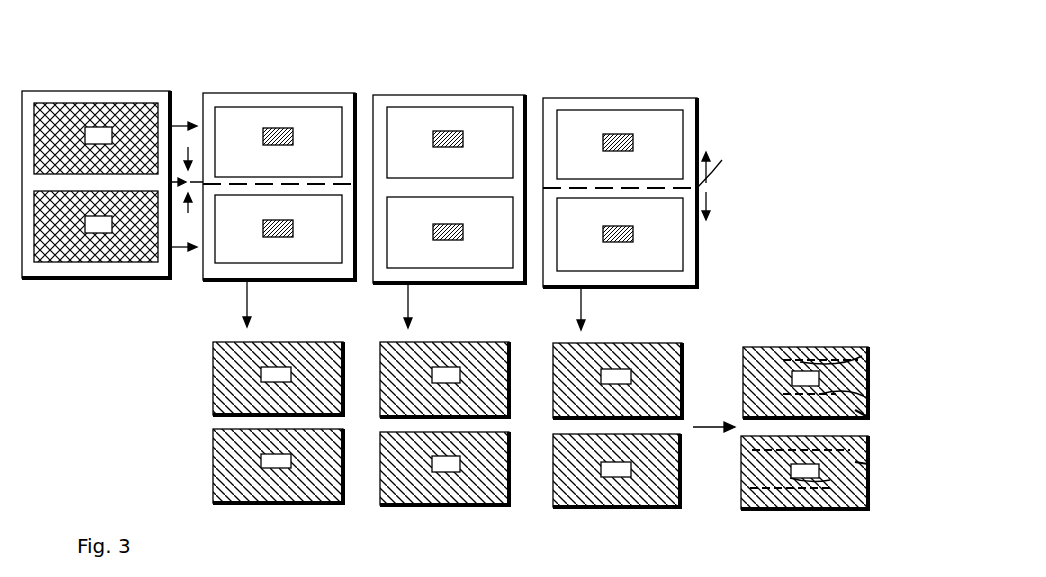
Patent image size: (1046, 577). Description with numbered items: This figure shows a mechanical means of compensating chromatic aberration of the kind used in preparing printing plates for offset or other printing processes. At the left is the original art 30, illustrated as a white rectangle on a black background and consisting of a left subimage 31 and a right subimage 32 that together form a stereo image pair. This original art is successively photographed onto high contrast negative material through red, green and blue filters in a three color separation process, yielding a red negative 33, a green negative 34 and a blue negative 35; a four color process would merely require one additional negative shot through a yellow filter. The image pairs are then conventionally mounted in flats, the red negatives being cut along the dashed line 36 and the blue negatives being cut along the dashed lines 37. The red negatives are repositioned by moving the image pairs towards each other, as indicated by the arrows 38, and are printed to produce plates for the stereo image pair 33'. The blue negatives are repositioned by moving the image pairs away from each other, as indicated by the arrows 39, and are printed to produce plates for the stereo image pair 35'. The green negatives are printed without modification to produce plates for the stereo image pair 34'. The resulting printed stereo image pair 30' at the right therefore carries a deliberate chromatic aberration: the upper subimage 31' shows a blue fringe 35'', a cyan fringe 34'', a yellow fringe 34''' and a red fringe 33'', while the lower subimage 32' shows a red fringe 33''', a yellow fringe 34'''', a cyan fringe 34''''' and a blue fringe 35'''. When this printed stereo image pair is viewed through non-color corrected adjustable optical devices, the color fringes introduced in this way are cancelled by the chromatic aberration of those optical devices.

The original art 30 is at (96, 148).
The left subimage 31 is at (95, 115).
The right subimage 32 is at (96, 254).
The red negative 33 is at (279, 170).
The green negative 34 is at (454, 173).
The blue negative 35 is at (623, 193).
The dashed line 36 is at (312, 190).
The dashed lines 37 is at (708, 158).
The arrows 38 is at (190, 148).
The arrows 39 is at (712, 180).
The printed stereo image pair 30' is at (800, 414).
The upper subimage 31' is at (833, 382).
The lower subimage 32' is at (832, 472).
The stereo image pair 33' is at (278, 408).
The stereo image pair 34' is at (450, 409).
The stereo image pair 35' is at (617, 412).
The red fringe 33'' is at (892, 427).
The red fringe 33''' is at (895, 468).
The cyan fringe 34'' is at (863, 355).
The yellow fringe 34''' is at (859, 404).
The yellow fringe 34'''' is at (771, 450).
The cyan fringe 34''''' is at (761, 473).
The blue fringe 35'' is at (828, 340).
The blue fringe 35''' is at (761, 498).